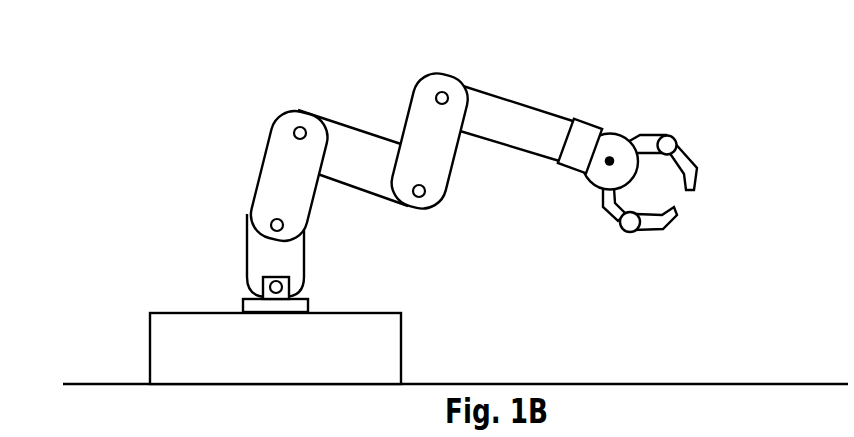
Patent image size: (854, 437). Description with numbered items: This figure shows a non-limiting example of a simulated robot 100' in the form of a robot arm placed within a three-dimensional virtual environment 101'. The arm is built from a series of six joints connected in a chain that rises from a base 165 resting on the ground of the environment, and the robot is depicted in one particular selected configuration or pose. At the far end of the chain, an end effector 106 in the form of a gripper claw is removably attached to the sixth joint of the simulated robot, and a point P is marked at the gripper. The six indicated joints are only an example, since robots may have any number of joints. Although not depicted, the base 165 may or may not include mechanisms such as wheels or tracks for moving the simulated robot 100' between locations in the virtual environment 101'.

The simulated robot 100' is at (92, 109).
The 3D virtual environment 101' is at (581, 296).
The end effector 106 is at (708, 136).
The base 165 is at (347, 312).
The tool center point P is at (611, 157).